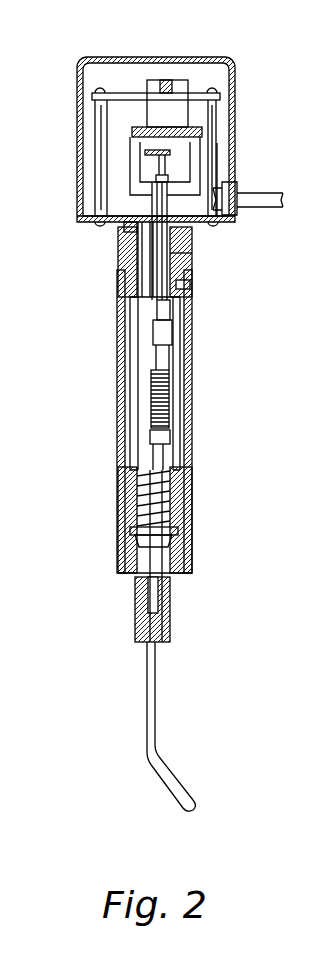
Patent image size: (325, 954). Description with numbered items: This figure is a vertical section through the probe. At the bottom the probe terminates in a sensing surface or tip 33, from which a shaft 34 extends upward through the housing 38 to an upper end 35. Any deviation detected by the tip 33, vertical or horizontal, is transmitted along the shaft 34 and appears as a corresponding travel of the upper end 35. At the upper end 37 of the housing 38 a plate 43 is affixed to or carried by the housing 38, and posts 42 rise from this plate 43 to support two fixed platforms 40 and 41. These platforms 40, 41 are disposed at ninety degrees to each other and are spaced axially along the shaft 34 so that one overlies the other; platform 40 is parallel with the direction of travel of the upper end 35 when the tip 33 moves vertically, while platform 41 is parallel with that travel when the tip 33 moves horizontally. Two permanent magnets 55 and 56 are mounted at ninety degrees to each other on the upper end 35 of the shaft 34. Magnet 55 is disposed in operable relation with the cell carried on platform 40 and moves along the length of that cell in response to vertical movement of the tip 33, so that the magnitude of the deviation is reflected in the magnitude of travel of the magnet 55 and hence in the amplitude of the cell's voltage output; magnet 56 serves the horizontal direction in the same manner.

The sensing tip 33 is at (175, 795).
The shaft 34 is at (163, 483).
The upper end of shaft 35 is at (195, 260).
The upper end of housing 37 is at (77, 180).
The housing 38 is at (193, 377).
The platform 40 is at (122, 92).
The platform 41 is at (170, 152).
The posts 42 is at (218, 143).
The plate 43 is at (118, 227).
The permanent magnet 55 is at (165, 80).
The permanent magnet 56 is at (200, 129).